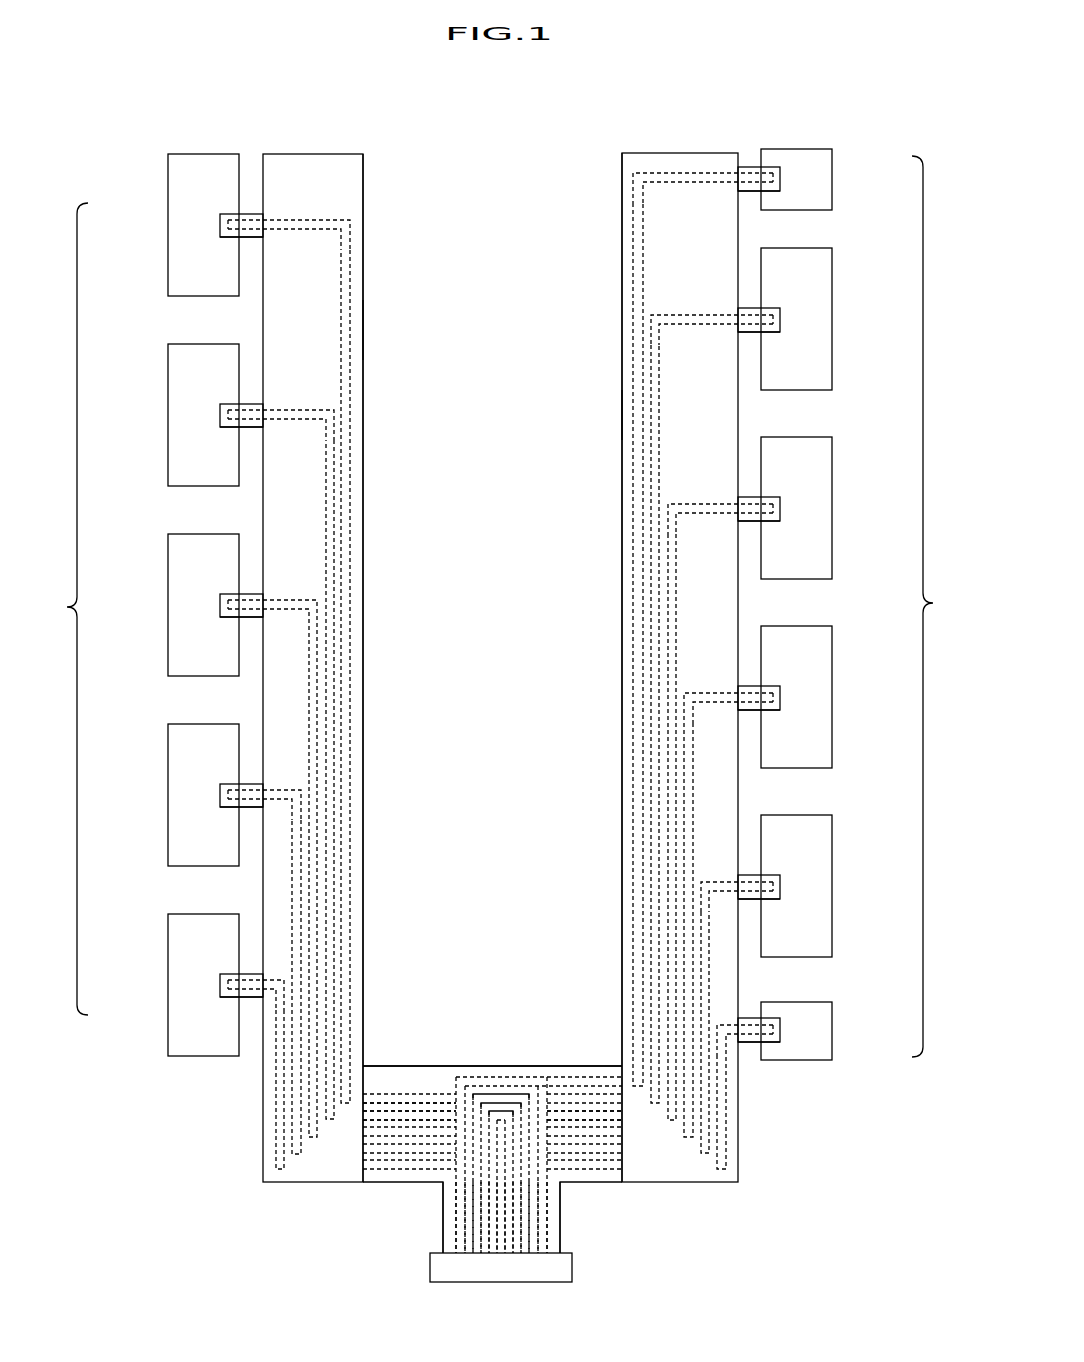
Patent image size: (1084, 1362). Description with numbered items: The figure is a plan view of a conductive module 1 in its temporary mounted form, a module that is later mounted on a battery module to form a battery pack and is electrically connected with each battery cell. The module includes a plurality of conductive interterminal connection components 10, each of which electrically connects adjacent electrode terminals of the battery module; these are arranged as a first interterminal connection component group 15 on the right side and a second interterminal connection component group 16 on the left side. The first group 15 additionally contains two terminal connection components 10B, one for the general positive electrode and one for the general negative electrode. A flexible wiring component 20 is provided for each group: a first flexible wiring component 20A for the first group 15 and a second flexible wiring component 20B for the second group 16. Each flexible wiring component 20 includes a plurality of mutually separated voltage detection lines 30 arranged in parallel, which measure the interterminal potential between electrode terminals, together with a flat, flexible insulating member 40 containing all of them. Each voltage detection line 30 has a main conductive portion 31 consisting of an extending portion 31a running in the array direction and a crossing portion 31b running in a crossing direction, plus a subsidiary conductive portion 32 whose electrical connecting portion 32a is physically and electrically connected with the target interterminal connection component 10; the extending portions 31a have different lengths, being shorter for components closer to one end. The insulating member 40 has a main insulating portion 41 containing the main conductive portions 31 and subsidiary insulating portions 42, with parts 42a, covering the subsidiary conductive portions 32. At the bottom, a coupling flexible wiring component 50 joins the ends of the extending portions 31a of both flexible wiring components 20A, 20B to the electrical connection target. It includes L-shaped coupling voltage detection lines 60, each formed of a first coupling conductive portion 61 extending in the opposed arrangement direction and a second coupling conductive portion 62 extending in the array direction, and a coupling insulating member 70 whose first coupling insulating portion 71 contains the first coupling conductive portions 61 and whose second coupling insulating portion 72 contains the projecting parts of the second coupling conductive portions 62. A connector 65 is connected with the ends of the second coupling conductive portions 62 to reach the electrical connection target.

The conductive module 1 is at (501, 141).
The interterminal connection component 10 is at (168, 227).
The terminal connection component 10B is at (832, 180).
The first interterminal connection component group 15 is at (937, 606).
The second interterminal connection component group 16 is at (65, 609).
The flexible wiring component 20 is at (504, 639).
The first flexible wiring component 20A is at (688, 150).
The second flexible wiring component 20B is at (314, 150).
The voltage detection line 30 is at (503, 661).
The main conductive portion 31 is at (503, 661).
The extending portion 31a is at (341, 319).
The crossing portion 31b is at (276, 233).
The subsidiary conductive portion 32 is at (501, 583).
The electrical connecting portion 32a is at (251, 214).
The insulating member 40 is at (384, 291).
The main insulating portion 41 is at (363, 332).
The subsidiary insulating portion 42 is at (501, 650).
The subsidiary insulating portion part 42a is at (251, 237).
The coupling flexible wiring component 50 is at (644, 1237).
The coupling voltage detection line 60 is at (408, 1119).
The first coupling conductive portion 61 is at (390, 1118).
The second coupling conductive portion 62 is at (500, 1215).
The connector 65 is at (430, 1275).
The coupling insulating member 70 is at (488, 1002).
The first coupling insulating portion 71 is at (475, 1090).
The second coupling insulating portion 72 is at (443, 1198).